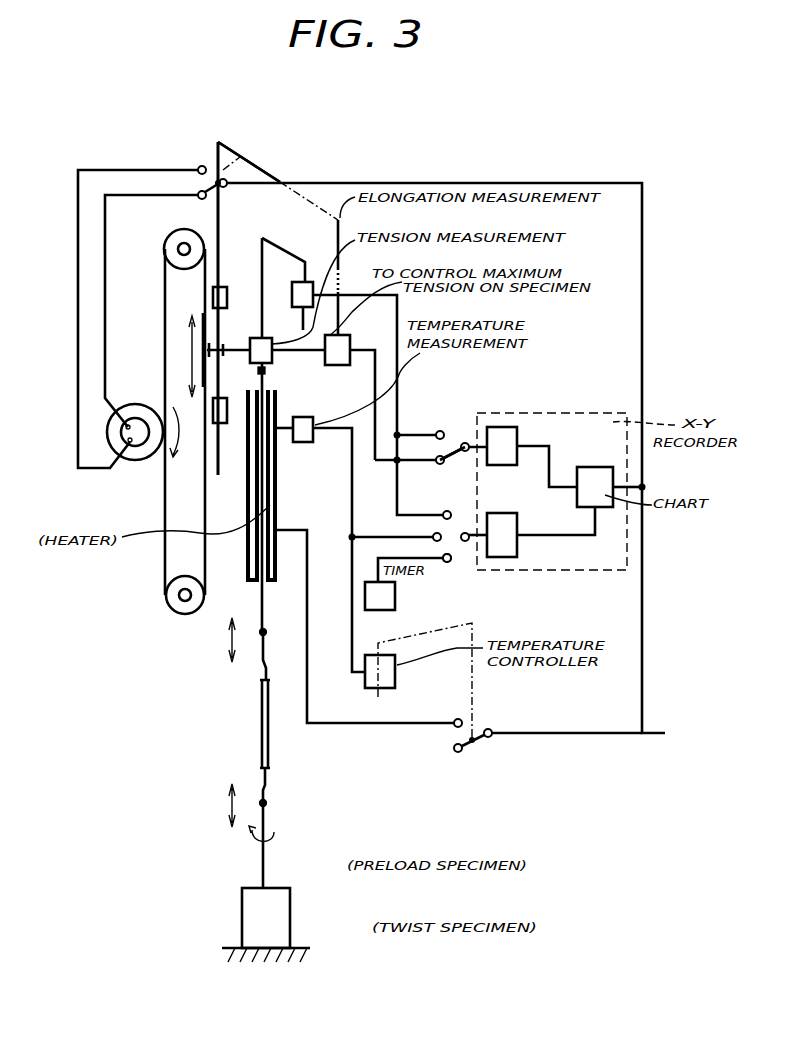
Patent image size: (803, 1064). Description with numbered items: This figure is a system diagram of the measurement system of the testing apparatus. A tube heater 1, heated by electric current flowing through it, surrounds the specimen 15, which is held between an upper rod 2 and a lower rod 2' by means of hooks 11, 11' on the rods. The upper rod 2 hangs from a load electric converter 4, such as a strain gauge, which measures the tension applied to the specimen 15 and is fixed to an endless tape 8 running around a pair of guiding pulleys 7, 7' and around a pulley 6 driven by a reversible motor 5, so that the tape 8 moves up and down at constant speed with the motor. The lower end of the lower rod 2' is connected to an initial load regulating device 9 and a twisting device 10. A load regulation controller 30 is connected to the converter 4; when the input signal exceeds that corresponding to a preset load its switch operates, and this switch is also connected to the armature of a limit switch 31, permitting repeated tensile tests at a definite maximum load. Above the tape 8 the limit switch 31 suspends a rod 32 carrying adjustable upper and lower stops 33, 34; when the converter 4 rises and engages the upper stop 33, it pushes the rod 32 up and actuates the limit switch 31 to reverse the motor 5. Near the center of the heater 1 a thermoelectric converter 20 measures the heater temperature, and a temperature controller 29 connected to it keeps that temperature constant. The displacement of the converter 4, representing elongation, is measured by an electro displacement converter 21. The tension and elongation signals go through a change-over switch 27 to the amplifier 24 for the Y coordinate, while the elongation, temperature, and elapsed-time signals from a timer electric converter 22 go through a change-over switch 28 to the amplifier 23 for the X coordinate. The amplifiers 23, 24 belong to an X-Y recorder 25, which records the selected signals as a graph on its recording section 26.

The tube heater 1 is at (277, 500).
The upper rod 2 is at (258, 499).
The lower rod 2' is at (285, 844).
The load electric converter 4 is at (272, 355).
The reversible motor 5 is at (128, 465).
The pulley 6 is at (140, 460).
The guiding pulley 7 is at (165, 249).
The guiding pulley 7' is at (165, 620).
The endless tape 8 is at (163, 541).
The initial load regulating device 9 is at (273, 900).
The twisting device 10 is at (272, 930).
The hook 11 is at (238, 673).
The hook 11' is at (295, 785).
The specimen 15 is at (260, 728).
The thermoelectric converter 20 is at (303, 442).
The electro displacement converter 21 is at (311, 282).
The timer electric converter 22 is at (395, 602).
The amplifier 23 is at (507, 557).
The amplifier 24 is at (503, 427).
The X-Y recorder 25 is at (568, 413).
The recording section 26 is at (596, 474).
The change-over switch 27 is at (447, 440).
The change-over switch 28 is at (455, 565).
The temperature controller 29 is at (395, 675).
The load regulation controller 30 is at (338, 365).
The limit switch 31 is at (240, 157).
The rod 32 is at (218, 222).
The upper stop 33 is at (222, 287).
The lower stop 34 is at (222, 423).